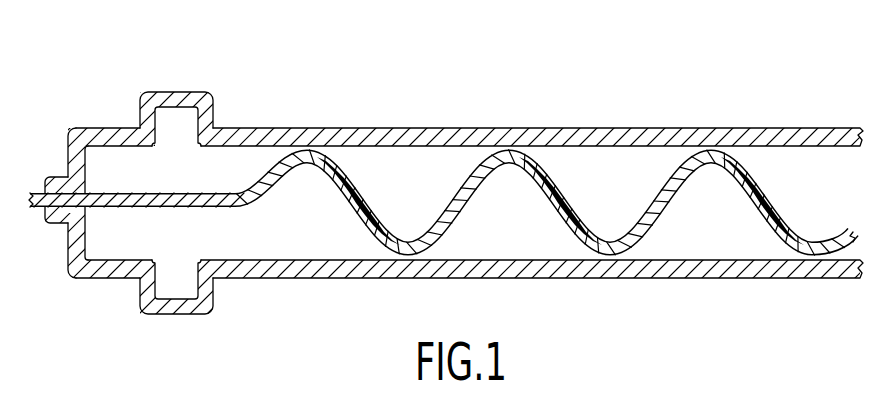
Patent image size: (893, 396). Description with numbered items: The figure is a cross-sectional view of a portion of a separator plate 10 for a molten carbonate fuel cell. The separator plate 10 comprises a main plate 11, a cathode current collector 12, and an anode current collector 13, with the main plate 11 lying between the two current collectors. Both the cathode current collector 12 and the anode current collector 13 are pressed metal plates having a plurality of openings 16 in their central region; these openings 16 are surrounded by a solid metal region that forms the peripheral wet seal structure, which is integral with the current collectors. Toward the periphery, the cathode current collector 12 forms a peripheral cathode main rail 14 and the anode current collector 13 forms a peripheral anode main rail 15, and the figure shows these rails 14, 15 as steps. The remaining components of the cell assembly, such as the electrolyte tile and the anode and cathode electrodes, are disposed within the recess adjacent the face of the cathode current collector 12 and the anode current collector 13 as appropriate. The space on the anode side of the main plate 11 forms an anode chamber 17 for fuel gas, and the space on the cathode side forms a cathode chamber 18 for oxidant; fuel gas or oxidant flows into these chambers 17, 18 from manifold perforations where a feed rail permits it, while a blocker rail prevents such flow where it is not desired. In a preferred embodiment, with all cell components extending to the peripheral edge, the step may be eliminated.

The separator plate 10 is at (588, 70).
The main plate 11 is at (777, 207).
The cathode current collector 12 is at (637, 129).
The anode current collector 13 is at (815, 278).
The peripheral cathode main rail 14 is at (176, 92).
The peripheral anode main rail 15 is at (175, 314).
The openings 16 is at (358, 128).
The anode chamber 17 is at (521, 236).
The cathode chamber 18 is at (431, 192).